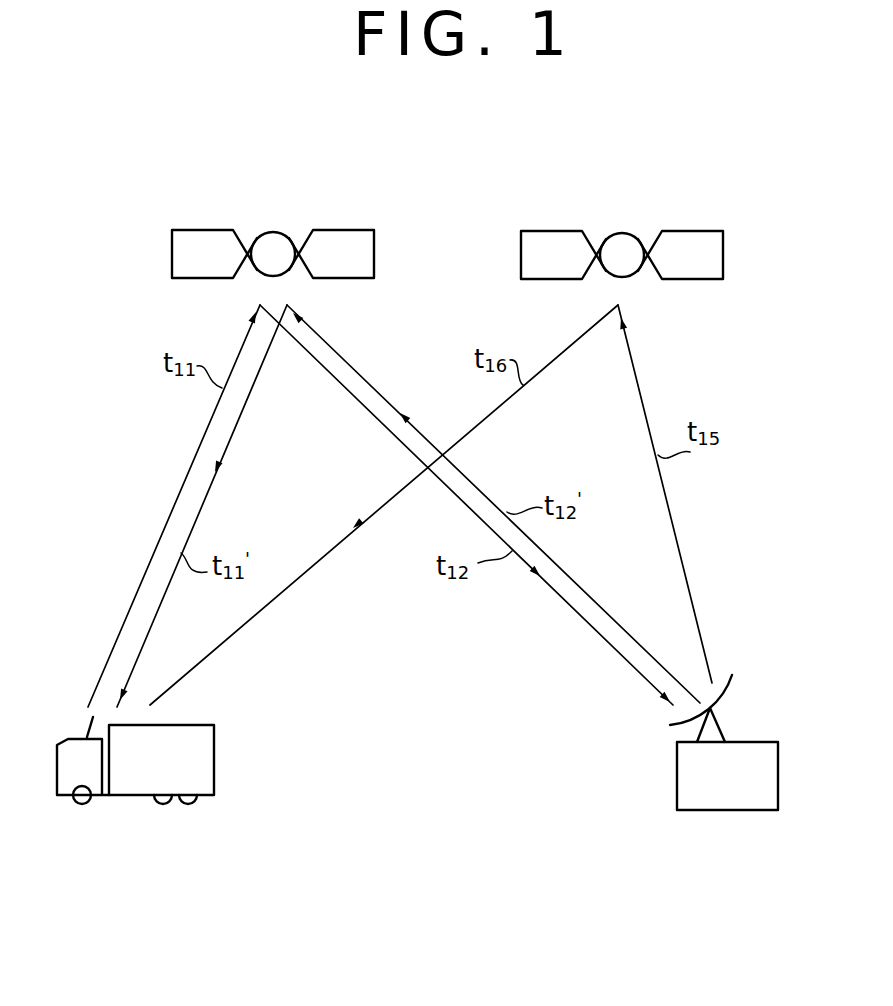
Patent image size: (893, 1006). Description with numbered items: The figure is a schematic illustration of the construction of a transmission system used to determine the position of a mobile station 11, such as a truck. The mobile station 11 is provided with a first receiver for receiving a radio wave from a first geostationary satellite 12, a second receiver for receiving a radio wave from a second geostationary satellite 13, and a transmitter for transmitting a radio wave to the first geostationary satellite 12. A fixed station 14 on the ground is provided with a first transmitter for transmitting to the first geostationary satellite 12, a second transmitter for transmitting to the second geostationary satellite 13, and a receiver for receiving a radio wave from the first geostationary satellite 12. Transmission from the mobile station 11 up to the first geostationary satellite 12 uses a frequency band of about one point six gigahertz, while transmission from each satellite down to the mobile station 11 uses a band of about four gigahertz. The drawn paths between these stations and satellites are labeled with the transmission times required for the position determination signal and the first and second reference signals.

The mobile station 11 is at (214, 770).
The first geostationary satellite 12 is at (280, 231).
The second geostationary satellite 13 is at (627, 232).
The fixed station 14 is at (727, 811).